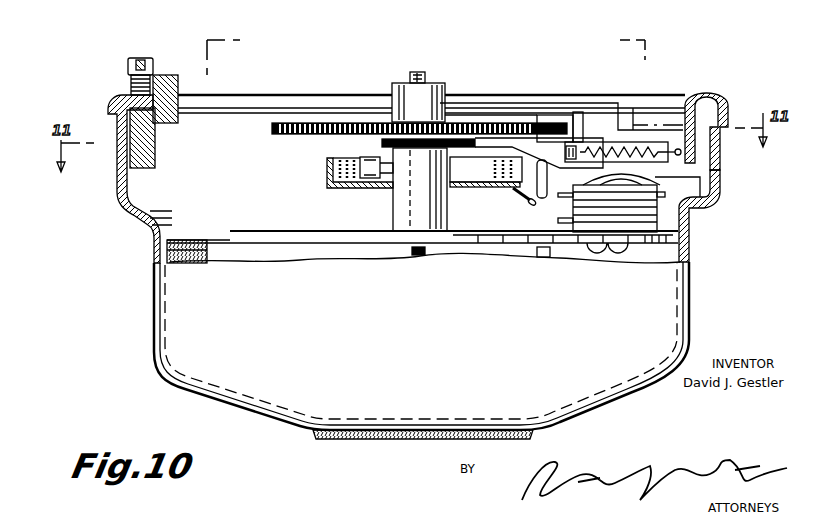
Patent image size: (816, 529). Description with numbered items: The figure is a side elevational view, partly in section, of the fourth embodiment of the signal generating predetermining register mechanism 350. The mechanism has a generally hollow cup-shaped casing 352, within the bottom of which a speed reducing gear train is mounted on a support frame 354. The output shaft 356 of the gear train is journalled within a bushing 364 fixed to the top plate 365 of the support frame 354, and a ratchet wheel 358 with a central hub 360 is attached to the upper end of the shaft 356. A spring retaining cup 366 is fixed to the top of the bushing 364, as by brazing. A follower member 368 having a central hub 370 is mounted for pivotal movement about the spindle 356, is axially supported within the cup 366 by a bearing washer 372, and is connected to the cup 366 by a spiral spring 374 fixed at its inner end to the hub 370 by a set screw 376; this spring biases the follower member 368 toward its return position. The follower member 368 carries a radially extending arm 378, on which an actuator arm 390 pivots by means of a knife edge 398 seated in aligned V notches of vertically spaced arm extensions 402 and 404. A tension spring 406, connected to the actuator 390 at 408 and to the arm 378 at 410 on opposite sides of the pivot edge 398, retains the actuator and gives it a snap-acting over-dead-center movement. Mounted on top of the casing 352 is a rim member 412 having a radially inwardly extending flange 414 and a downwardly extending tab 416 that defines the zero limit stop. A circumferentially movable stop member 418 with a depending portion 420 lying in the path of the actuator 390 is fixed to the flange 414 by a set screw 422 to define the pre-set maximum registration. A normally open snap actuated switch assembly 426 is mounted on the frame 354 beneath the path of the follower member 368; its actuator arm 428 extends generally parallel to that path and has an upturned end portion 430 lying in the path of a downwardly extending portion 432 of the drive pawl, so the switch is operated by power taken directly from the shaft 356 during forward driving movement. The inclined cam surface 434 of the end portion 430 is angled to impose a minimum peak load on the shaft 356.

The register mechanism 350 is at (151, 309).
The casing 352 is at (157, 232).
The support frame 354 is at (211, 236).
The output shaft 356 is at (424, 76).
The ratchet wheel 358 is at (351, 121).
The central hub 360 is at (447, 92).
The bushing 364 is at (398, 221).
The top plate 365 is at (260, 242).
The spring retaining cup 366 is at (331, 186).
The follower member 368 is at (478, 128).
The central hub 370 is at (446, 167).
The bearing washer 372 is at (413, 176).
The spiral spring 374 is at (328, 167).
The set screw 376 is at (371, 155).
The arm 378 is at (508, 140).
The actuator arm 390 is at (650, 116).
The knife edge 398 is at (620, 146).
The arm extension 402 is at (580, 112).
The arm extension 404 is at (654, 172).
The tension spring 406 is at (640, 127).
The connection point 408 is at (697, 138).
The connection point 410 is at (563, 156).
The rim member 412 is at (263, 88).
The flange 414 is at (298, 104).
The tab 416 is at (719, 110).
The stop member 418 is at (173, 126).
The depending portion 420 is at (156, 164).
The set screw 422 is at (175, 46).
The switch assembly 426 is at (672, 214).
The actuator arm 428 is at (572, 219).
The upturned end portion 430 is at (518, 198).
The downwardly extending portion 432 is at (512, 192).
The cam surface 434 is at (528, 207).